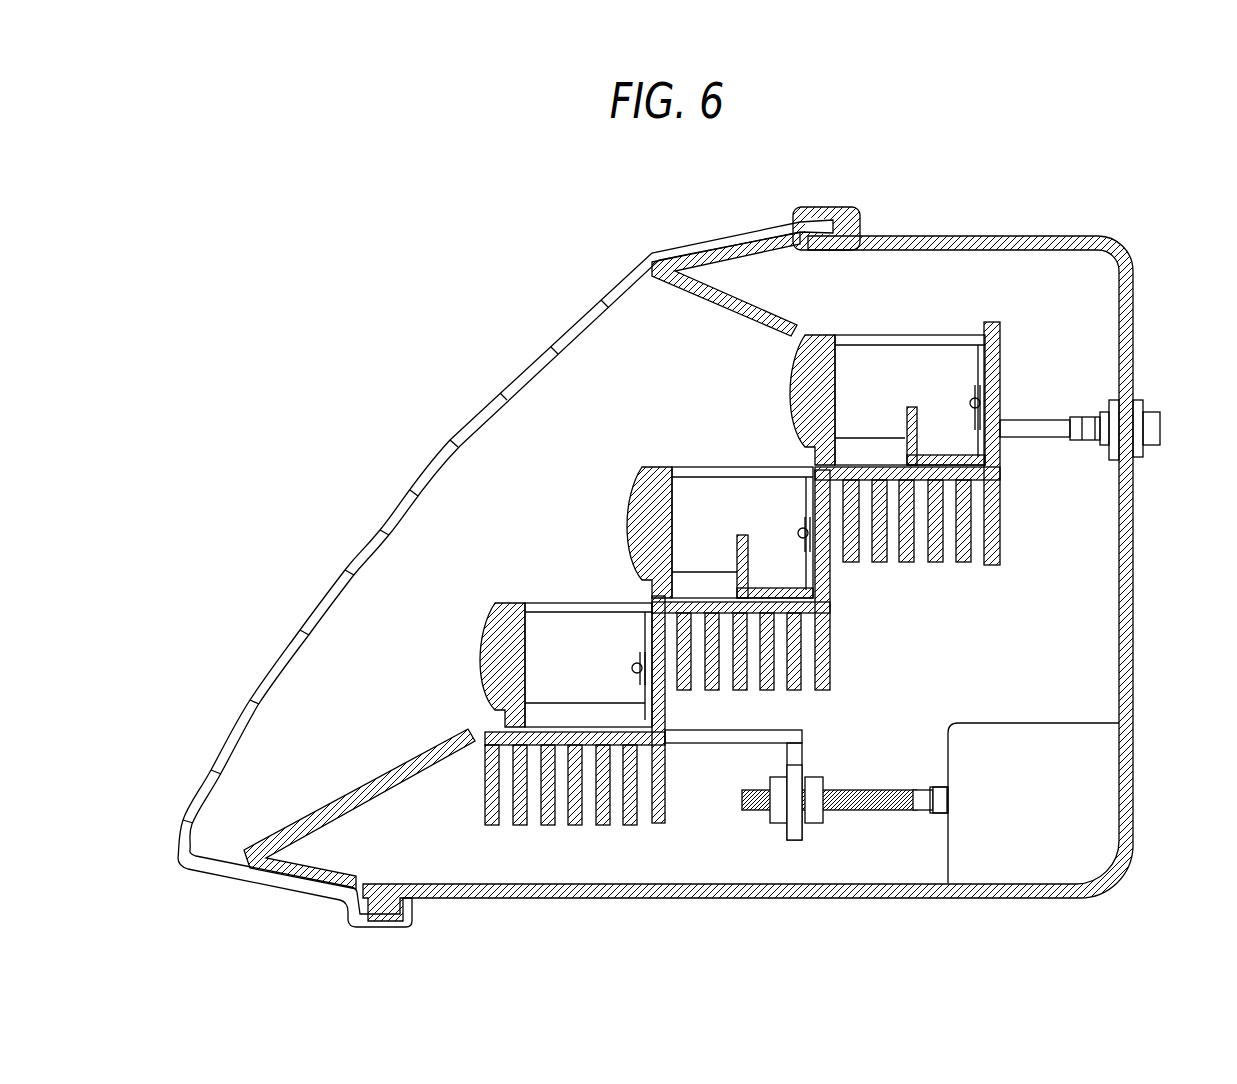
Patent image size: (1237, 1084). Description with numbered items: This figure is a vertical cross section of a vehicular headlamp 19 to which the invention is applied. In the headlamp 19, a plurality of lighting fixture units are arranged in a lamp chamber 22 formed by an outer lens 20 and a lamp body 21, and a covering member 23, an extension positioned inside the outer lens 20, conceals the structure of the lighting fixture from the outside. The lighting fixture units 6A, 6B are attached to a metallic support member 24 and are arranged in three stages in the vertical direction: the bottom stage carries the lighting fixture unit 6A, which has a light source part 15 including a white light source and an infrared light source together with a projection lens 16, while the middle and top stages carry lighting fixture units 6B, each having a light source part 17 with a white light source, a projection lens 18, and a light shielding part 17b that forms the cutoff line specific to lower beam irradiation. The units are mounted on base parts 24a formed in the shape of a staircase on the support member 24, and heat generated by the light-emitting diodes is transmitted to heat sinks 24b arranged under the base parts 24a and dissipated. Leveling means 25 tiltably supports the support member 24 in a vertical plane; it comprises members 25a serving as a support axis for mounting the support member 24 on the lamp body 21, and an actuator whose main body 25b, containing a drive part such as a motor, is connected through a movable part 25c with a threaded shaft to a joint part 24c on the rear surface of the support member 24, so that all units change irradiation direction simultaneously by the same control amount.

The lighting fixture unit 6A is at (465, 638).
The lighting fixture unit 6B is at (780, 383).
The light source part 15 is at (632, 668).
The projection lens 16 is at (482, 672).
The light source part 17 is at (975, 398).
The light shielding part 17b is at (900, 437).
The projection lens 18 is at (798, 415).
The vehicular headlamp 19 is at (485, 318).
The outer lens 20 is at (445, 450).
The lamp body 21 is at (1135, 350).
The lamp chamber 22 is at (1080, 283).
The covering member 23 is at (722, 298).
The support member 24 is at (998, 347).
The base part 24a is at (1000, 420).
The heat sink 24b is at (932, 564).
The joint part 24c is at (800, 770).
The leveling means 25 is at (1020, 700).
The member serving as support axis 25a is at (1058, 440).
The actuator main body 25b is at (1088, 832).
The movable part of actuator 25c is at (858, 810).